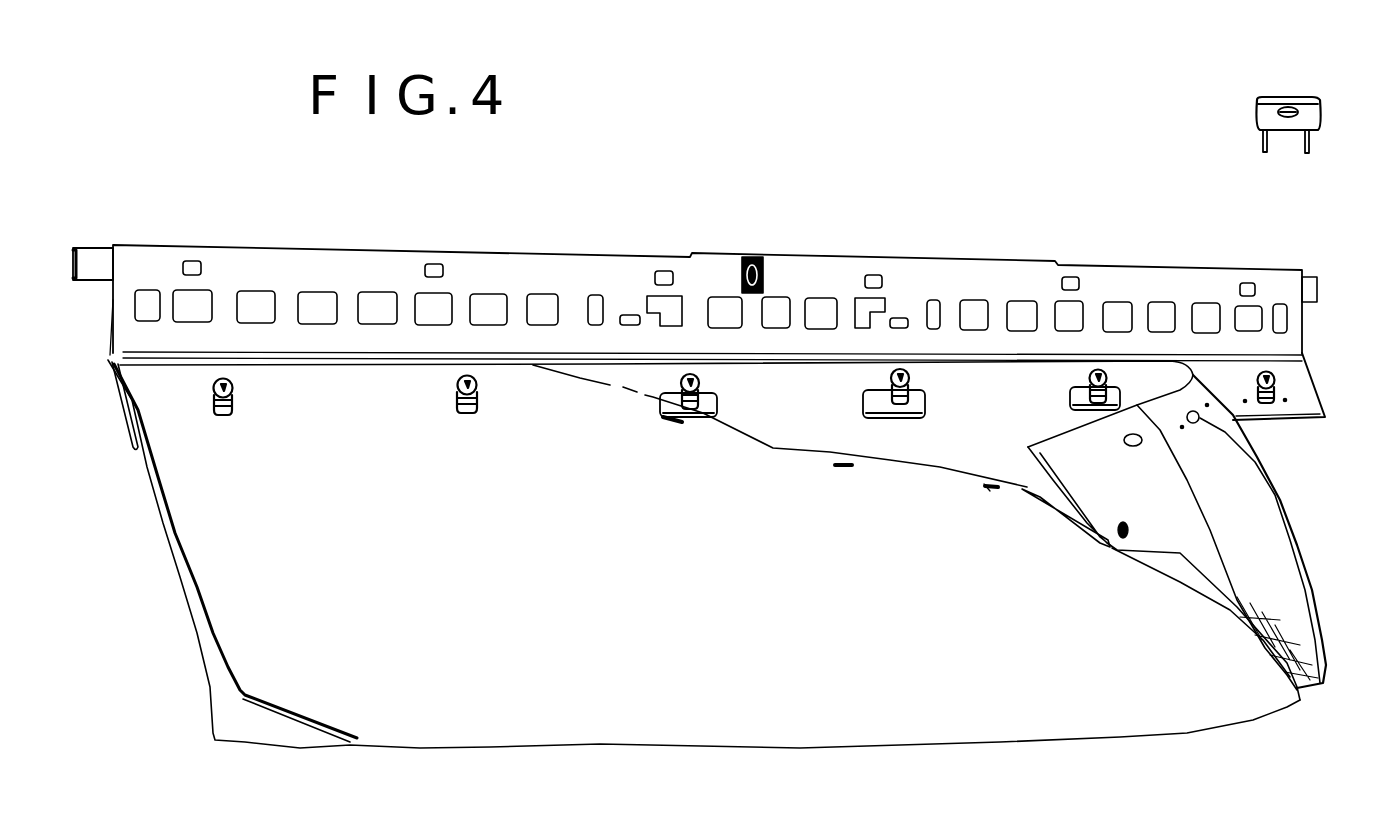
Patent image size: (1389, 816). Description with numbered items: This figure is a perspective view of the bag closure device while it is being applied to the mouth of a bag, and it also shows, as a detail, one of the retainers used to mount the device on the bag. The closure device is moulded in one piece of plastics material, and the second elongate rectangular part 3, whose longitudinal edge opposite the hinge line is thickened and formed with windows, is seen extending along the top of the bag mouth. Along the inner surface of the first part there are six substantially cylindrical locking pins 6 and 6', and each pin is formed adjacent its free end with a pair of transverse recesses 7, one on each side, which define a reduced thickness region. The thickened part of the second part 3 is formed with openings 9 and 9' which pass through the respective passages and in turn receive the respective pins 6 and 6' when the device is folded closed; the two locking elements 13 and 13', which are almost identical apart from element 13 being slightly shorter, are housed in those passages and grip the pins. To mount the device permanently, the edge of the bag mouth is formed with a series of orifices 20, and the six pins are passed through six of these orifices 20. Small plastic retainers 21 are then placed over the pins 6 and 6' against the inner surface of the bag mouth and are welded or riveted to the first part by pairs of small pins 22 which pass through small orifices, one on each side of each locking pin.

The second elongate rectangular part 3 is at (925, 270).
The locking pin 6 is at (346, 425).
The locking pin 6' is at (1013, 423).
The transverse recess 7 is at (1275, 385).
The opening 9 is at (433, 238).
The opening 9' is at (1056, 246).
The locking element 13 is at (93, 232).
The locking element 13' is at (1313, 248).
The orifice 20 is at (985, 487).
The retainer 21 is at (1078, 397).
The small pin 22 is at (1262, 140).